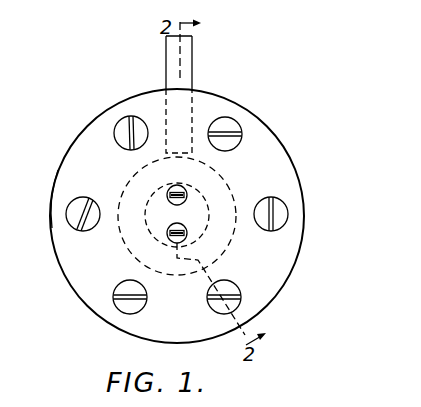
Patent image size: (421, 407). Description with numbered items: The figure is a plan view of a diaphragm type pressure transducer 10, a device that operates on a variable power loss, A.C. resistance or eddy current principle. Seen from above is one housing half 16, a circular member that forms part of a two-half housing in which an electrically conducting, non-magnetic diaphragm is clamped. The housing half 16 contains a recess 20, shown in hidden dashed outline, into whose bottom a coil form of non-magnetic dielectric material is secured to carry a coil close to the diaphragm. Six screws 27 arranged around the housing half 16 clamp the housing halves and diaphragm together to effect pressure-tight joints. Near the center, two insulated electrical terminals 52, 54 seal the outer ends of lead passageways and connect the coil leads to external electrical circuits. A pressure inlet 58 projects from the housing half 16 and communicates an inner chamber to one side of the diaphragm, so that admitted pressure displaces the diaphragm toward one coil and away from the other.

The diaphragm type pressure transducer 10 is at (284, 127).
The housing half 16 is at (80, 146).
The recess 20 is at (221, 186).
The screws 27 is at (278, 213).
The insulated electrical terminal 52 is at (178, 185).
The insulated electrical terminal 54 is at (170, 238).
The pressure inlet 58 is at (174, 53).